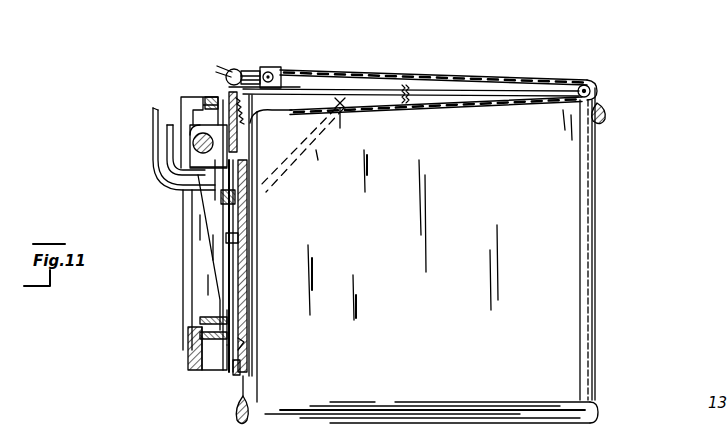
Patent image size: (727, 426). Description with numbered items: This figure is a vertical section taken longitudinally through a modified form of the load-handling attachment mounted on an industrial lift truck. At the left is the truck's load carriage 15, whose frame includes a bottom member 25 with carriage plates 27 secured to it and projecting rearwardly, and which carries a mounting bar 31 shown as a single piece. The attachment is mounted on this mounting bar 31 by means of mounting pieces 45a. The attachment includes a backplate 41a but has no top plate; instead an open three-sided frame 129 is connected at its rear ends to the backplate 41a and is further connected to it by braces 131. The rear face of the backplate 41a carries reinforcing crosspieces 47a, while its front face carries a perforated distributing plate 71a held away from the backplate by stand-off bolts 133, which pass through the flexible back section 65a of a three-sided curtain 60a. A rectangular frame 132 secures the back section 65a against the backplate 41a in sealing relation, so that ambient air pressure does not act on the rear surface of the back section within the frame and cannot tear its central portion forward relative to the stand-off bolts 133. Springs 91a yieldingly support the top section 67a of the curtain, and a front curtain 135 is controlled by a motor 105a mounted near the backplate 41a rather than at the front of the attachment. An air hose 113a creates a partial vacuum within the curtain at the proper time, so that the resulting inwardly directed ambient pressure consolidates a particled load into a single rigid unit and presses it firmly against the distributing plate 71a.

The load carriage 15 is at (195, 98).
The bottom member 25 is at (188, 354).
The carriage plates 27 is at (185, 263).
The mounting bar 31 is at (200, 145).
The backplate 41a is at (243, 362).
The mounting pieces 45a is at (220, 219).
The reinforcing crosspieces 47a is at (236, 197).
The three-sided curtain 60a is at (562, 243).
The flexible back section 65a is at (240, 379).
The top section 67a is at (487, 102).
The perforated distributing plate 71a is at (244, 283).
The springs 91a is at (262, 108).
The motor 105a is at (240, 69).
The air hose 113a is at (155, 128).
The open three-sided frame 129 is at (476, 94).
The braces 131 is at (314, 145).
The rectangular frame 132 is at (243, 346).
The stand-off bolts 133 is at (240, 237).
The front curtain 135 is at (536, 74).